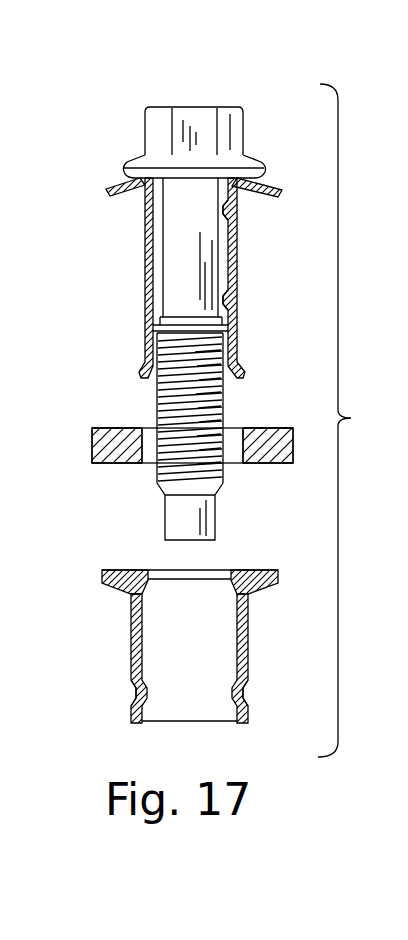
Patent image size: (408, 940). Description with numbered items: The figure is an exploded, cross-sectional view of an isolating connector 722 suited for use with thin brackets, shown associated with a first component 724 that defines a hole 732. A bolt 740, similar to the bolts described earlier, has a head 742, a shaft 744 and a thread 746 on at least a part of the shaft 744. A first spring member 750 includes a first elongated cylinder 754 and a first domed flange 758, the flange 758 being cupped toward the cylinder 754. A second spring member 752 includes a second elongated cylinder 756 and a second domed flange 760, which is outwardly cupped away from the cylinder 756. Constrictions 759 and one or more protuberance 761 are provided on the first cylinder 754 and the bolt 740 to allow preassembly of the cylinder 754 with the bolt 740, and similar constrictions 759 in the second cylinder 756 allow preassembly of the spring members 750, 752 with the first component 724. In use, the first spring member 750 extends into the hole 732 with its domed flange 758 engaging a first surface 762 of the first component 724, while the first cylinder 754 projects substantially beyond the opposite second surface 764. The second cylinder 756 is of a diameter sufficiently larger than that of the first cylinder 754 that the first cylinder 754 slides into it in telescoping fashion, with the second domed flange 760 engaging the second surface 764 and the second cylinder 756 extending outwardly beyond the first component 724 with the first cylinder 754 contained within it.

The isolating connector 722 is at (125, 133).
The bolt 740 is at (193, 92).
The head 742 is at (244, 130).
The shaft 744 is at (178, 223).
The thread 746 is at (205, 397).
The first spring member 750 is at (126, 268).
The first elongated cylinder 754 is at (148, 292).
The first domed flange 758 is at (110, 185).
The constrictions 759 is at (248, 211).
The protuberance 761 is at (214, 348).
The first component 724 is at (92, 446).
The hole 732 is at (236, 438).
The first surface 762 is at (127, 428).
The second surface 764 is at (117, 464).
The second spring member 752 is at (116, 684).
The second elongated cylinder 756 is at (132, 617).
The second domed flange 760 is at (108, 570).